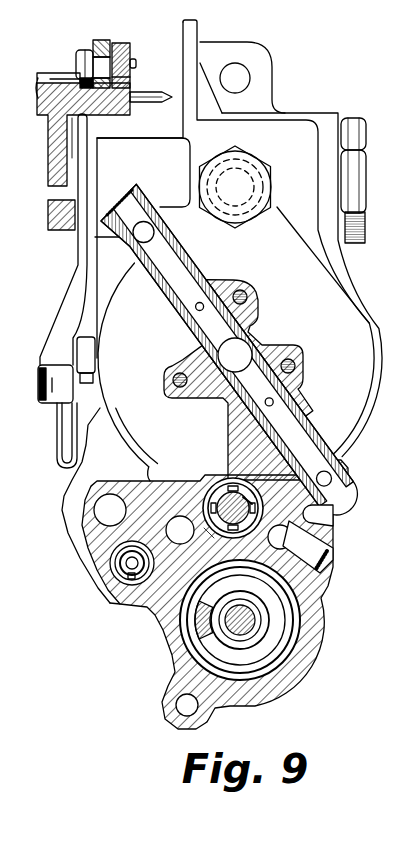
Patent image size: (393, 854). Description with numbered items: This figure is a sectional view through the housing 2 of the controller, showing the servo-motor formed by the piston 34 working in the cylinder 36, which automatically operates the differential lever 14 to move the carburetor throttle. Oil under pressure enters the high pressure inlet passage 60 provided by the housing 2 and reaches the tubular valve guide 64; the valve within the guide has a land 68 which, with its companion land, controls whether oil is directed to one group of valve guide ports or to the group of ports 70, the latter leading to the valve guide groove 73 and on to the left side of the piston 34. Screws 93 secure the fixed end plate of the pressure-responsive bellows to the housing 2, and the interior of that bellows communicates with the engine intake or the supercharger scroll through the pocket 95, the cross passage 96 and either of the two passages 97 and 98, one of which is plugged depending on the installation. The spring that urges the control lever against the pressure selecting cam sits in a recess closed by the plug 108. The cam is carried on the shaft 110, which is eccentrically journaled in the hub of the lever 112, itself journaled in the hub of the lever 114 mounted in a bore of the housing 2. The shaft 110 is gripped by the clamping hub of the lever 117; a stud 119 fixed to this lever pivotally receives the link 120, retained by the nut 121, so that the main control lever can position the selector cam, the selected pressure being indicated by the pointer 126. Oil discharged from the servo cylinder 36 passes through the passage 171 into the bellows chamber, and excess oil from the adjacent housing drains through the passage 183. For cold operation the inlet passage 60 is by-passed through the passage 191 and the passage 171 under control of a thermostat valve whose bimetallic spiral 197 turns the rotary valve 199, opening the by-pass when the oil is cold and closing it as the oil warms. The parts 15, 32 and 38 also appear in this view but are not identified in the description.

The housing 2 is at (320, 113).
The differential lever 14 is at (330, 566).
The recess 15 is at (320, 530).
The shaft 32 is at (243, 608).
The piston 34 is at (182, 632).
The cylinder 36 is at (310, 655).
The bearing 38 is at (291, 630).
The passage 60 is at (112, 500).
The tubular valve guide 64 is at (280, 525).
The land 68 is at (226, 498).
The valve guide ports 70 is at (238, 480).
The valve guide groove 73 is at (224, 534).
The screws 93 is at (246, 292).
The pocket 95 is at (240, 352).
The cross passage 96 is at (194, 262).
The passage 97 is at (333, 480).
The passage 98 is at (147, 226).
The plug 108 is at (253, 172).
The shaft 110 is at (48, 197).
The lever 112 is at (78, 287).
The lever 114 is at (57, 440).
The lever 117 is at (54, 143).
The stud 119 is at (136, 65).
The link 120 is at (109, 41).
The nut 121 is at (76, 62).
The pointer 126 is at (148, 102).
The passage 171 is at (182, 516).
The passage 183 is at (176, 705).
The passage 191 is at (113, 578).
The bimetallic spiral 197 is at (118, 590).
The rotary valve 199 is at (124, 565).